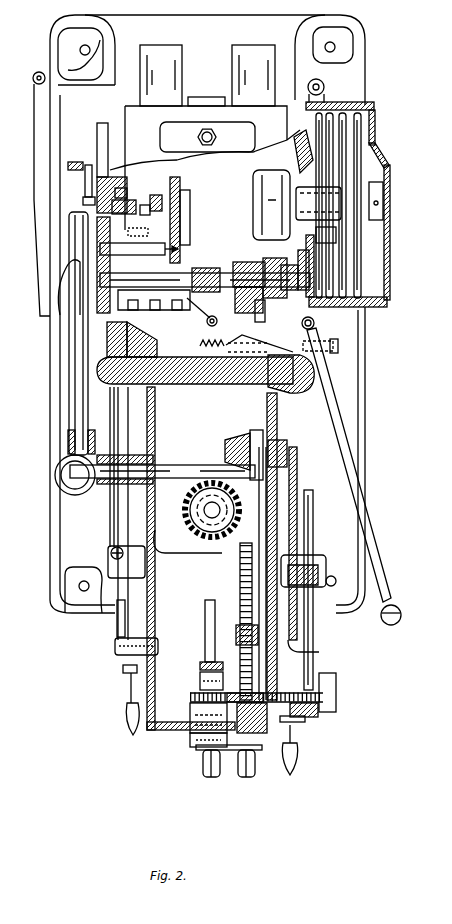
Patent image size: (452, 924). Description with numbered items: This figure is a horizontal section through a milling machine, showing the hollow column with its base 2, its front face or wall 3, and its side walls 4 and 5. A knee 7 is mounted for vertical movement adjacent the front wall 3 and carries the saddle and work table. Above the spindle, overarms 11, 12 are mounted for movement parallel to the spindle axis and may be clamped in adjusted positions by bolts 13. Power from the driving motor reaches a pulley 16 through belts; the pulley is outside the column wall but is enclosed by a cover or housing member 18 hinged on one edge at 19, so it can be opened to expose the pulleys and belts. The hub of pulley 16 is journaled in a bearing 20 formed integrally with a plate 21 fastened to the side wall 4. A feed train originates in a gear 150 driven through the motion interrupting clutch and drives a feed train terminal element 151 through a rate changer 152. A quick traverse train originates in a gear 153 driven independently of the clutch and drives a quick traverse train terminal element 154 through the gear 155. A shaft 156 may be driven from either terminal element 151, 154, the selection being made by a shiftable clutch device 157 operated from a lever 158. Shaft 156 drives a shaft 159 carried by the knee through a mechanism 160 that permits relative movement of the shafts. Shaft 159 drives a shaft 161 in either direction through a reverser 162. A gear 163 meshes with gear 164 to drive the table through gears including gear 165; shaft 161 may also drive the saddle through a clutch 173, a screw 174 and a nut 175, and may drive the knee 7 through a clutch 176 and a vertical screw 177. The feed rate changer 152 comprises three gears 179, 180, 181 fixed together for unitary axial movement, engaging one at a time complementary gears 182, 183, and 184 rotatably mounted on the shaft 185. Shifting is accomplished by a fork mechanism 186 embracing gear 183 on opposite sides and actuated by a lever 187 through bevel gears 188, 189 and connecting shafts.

The base 2 is at (354, 400).
The front face or wall 3 is at (289, 387).
The side wall 4 is at (313, 320).
The side wall 5 is at (107, 353).
The knee 7 is at (155, 730).
The overarm 11 is at (147, 46).
The overarm 12 is at (243, 47).
The bolt 13 is at (198, 138).
The pulley 16 is at (363, 133).
The cover or housing member 18 is at (386, 243).
The hinge 19 is at (324, 86).
The bearing 20 is at (333, 233).
The plate 21 is at (306, 272).
The gear 150 is at (172, 180).
The feed train terminal element 151 is at (187, 302).
The rate changer 152 is at (95, 213).
The gear 153 is at (258, 176).
The quick traverse train terminal element 154 is at (249, 308).
The gear 155 is at (276, 322).
The shaft 156 is at (274, 270).
The shiftable clutch device 157 is at (215, 262).
The lever 158 is at (382, 562).
The shaft 159 is at (181, 464).
The mechanism 160 is at (60, 450).
The shaft 161 is at (261, 543).
The reverser 162 is at (278, 445).
The gear 163 is at (301, 717).
The gear 164 is at (336, 697).
The gear 165 is at (316, 573).
The clutch 173 is at (269, 737).
The screw 174 is at (243, 572).
The nut 175 is at (240, 628).
The clutch 176 is at (203, 664).
The vertical screw 177 is at (207, 513).
The gear 179 is at (135, 310).
The gear 180 is at (176, 312).
The gear 181 is at (157, 310).
The gear 182 is at (128, 216).
The gear 183 is at (154, 211).
The gear 184 is at (146, 232).
The shaft 185 is at (100, 246).
The fork mechanism 186 is at (130, 188).
The lever 187 is at (82, 185).
The bevel gear 188 is at (115, 177).
The bevel gear 189 is at (168, 200).